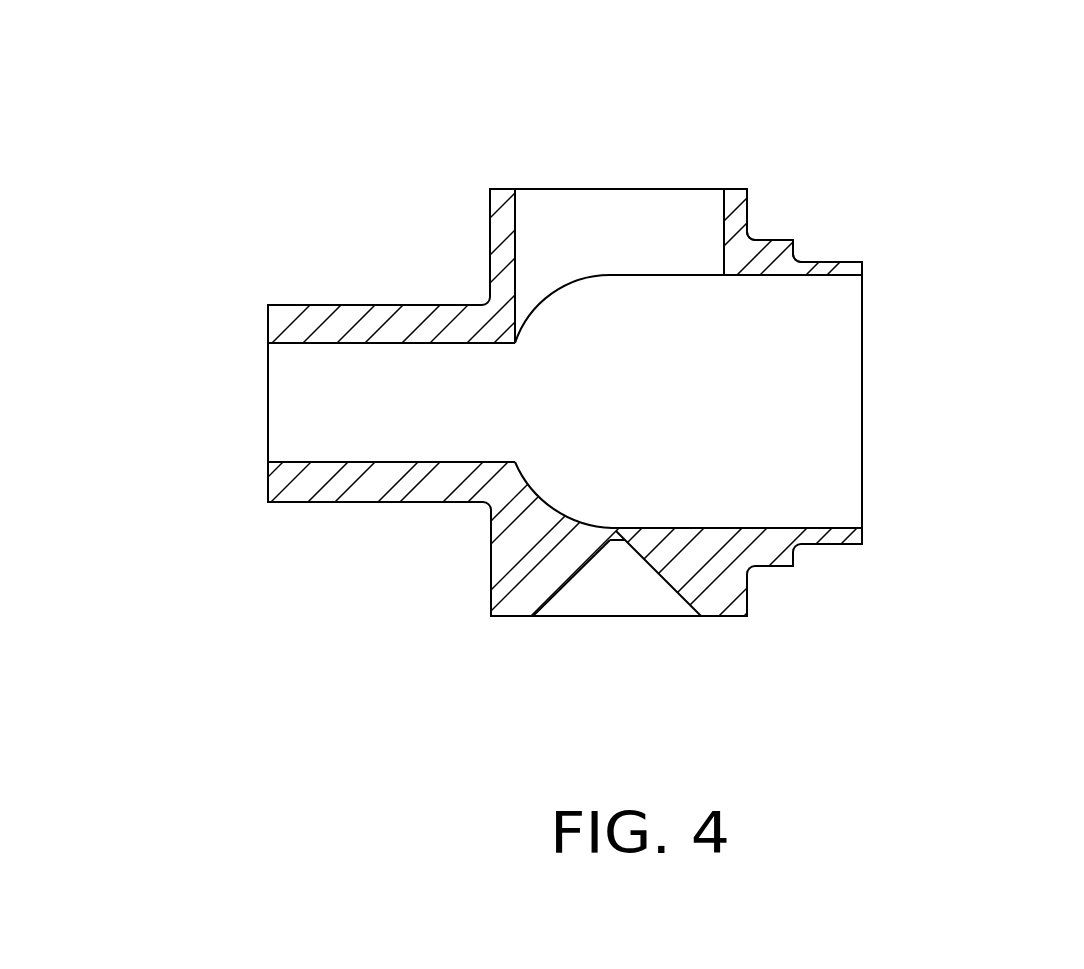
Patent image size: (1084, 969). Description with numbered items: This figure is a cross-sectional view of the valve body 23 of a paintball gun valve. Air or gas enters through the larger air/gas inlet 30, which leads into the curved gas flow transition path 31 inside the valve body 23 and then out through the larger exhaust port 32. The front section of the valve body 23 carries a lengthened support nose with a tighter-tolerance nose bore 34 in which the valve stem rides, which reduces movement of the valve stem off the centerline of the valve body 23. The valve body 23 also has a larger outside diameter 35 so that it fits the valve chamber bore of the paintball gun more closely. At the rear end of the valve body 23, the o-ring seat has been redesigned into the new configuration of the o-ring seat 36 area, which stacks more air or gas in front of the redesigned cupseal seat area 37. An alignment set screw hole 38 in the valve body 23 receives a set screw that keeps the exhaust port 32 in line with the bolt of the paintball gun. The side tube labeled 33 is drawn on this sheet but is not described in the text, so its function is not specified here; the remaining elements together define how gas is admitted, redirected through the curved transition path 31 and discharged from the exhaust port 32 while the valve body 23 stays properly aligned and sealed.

The valve body 23 is at (490, 197).
The air/gas inlet 30 is at (863, 362).
The curved gas flow transition path 31 is at (580, 522).
The exhaust port 32 is at (617, 189).
The side tube 33 is at (312, 503).
The nose bore 34 is at (293, 335).
The outside diameter 35 is at (605, 530).
The o-ring seat 36 is at (770, 240).
The cupseal seat area 37 is at (863, 267).
The alignment set screw hole 38 is at (662, 578).